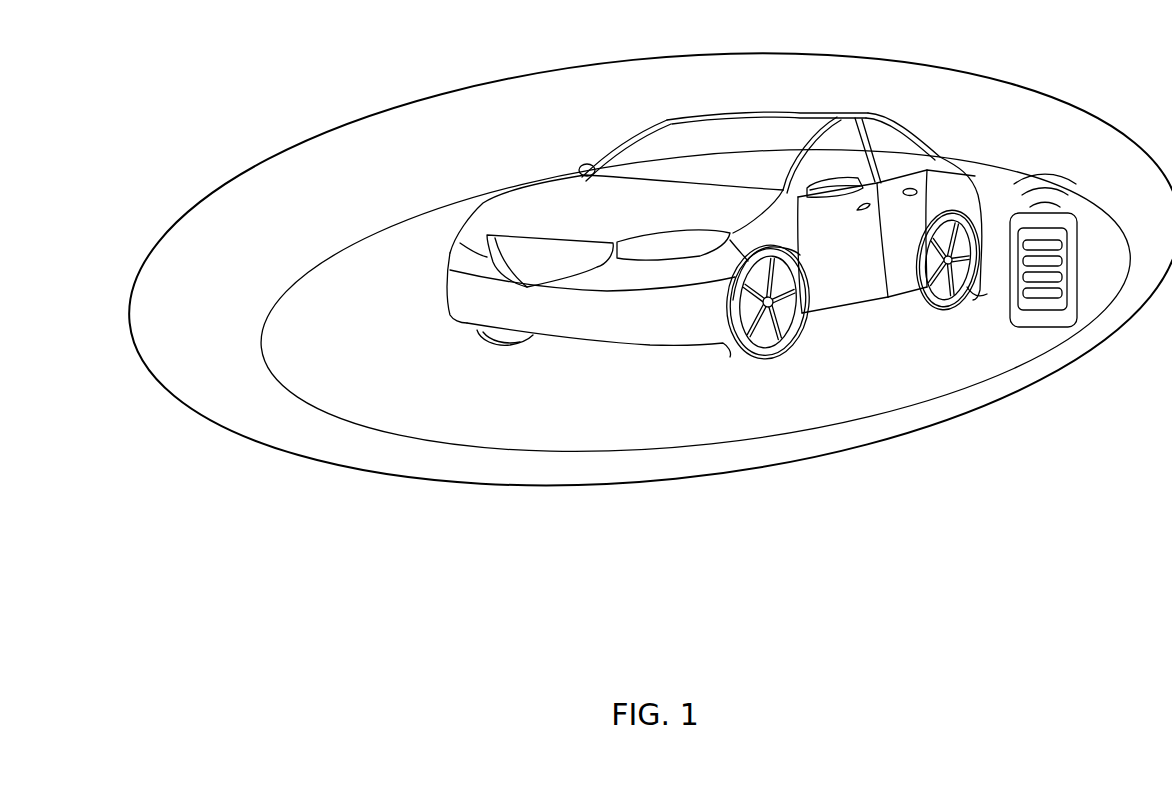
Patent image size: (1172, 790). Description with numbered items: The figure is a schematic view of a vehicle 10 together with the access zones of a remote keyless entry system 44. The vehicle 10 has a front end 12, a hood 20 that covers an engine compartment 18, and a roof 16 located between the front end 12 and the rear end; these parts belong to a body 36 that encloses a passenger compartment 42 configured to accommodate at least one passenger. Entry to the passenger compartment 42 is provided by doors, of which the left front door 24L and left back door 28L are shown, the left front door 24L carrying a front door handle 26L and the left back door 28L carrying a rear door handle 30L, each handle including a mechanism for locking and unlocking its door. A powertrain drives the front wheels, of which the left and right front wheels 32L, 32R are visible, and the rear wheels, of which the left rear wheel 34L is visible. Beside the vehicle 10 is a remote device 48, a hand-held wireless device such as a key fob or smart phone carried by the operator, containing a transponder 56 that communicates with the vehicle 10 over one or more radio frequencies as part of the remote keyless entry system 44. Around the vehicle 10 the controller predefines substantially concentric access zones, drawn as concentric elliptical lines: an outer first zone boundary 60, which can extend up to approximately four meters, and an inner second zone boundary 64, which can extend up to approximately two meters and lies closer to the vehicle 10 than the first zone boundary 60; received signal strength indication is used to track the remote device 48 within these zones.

The vehicle 10 is at (688, 243).
The front end 12 is at (457, 300).
The roof 16 is at (773, 116).
The engine compartment 18 is at (587, 222).
The hood 20 is at (553, 203).
The left front door 24L is at (850, 287).
The left front door handle 26L is at (857, 207).
The left back door 28L is at (897, 283).
The left rear door handle 30L is at (917, 190).
The left front wheel 32L is at (773, 357).
The right front wheel 32R is at (497, 337).
The left rear wheel 34L is at (970, 277).
The body 36 is at (883, 117).
The passenger compartment 42 is at (900, 158).
The remote keyless entry system 44 is at (640, 282).
The remote device 48 is at (1070, 260).
The transponder 56 is at (1060, 213).
The first zone boundary 60 is at (373, 470).
The second zone boundary 64 is at (367, 427).